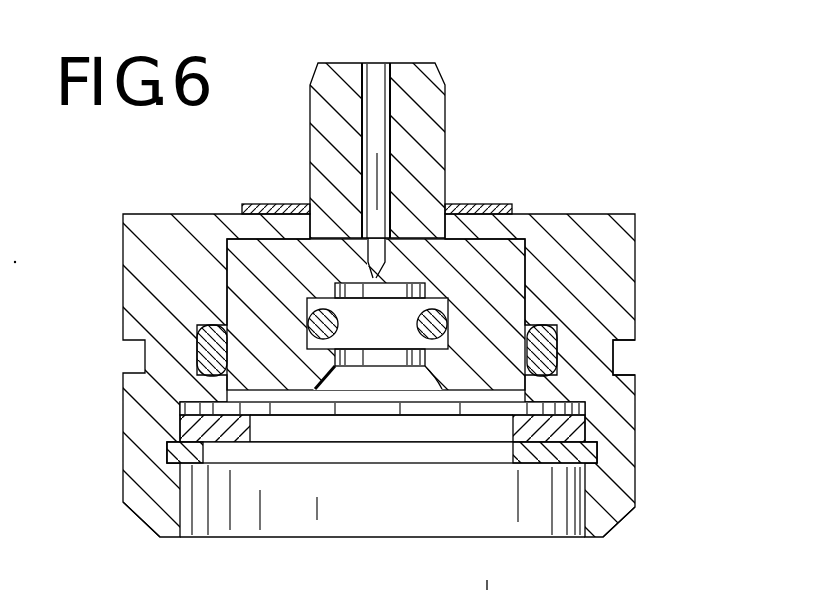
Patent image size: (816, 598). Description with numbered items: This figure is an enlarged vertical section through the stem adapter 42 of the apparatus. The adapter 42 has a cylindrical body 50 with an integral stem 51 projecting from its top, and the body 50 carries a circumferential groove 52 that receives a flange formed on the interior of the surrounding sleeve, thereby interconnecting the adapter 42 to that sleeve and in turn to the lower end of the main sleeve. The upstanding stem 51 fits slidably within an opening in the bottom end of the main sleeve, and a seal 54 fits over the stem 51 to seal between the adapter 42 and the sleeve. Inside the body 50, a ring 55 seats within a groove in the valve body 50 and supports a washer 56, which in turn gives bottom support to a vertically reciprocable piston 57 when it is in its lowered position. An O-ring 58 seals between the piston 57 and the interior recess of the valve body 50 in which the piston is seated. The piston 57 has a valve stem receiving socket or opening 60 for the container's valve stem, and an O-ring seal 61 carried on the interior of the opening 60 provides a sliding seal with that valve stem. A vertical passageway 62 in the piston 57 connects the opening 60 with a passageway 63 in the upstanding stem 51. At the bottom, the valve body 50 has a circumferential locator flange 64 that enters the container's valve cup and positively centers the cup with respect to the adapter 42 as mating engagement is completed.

The adapter 42 is at (596, 152).
The cylindrical body 50 is at (635, 258).
The stem 51 is at (361, 124).
The circumferential groove 52 is at (617, 360).
The seal 54 is at (272, 204).
The ring 55 is at (542, 466).
The washer 56 is at (235, 442).
The piston 57 is at (378, 369).
The O-ring 58 is at (557, 357).
The valve stem receiving socket or opening 60 is at (428, 367).
The O-ring seal 61 is at (317, 349).
The vertical passageway 62 is at (374, 278).
The passageway 63 is at (372, 82).
The circumferential locator flange 64 is at (623, 513).